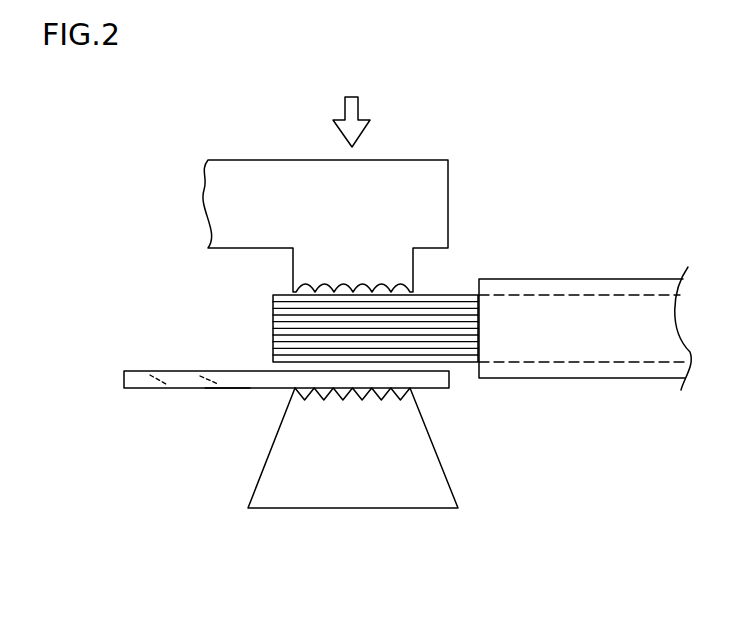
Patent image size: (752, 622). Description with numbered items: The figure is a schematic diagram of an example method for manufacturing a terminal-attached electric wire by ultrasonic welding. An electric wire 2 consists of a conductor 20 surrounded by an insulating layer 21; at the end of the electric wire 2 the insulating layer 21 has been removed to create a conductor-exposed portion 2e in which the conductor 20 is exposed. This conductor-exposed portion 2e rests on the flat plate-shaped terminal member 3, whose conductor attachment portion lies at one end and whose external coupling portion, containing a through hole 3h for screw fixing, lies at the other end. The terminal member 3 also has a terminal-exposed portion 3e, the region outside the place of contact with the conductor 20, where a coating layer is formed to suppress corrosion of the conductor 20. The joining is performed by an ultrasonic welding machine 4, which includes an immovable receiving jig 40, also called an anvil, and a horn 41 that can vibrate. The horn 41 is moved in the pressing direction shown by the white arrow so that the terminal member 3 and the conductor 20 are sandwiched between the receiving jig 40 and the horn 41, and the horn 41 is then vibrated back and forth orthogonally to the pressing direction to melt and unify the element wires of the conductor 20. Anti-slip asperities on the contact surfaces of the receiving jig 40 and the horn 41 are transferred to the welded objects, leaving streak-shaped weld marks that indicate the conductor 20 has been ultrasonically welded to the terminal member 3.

The electric wire 2 is at (585, 270).
The conductor 20 is at (568, 308).
The insulating layer 21 is at (632, 285).
The conductor-exposed portion 2e is at (462, 291).
The terminal member 3 is at (148, 371).
The through hole 3h is at (190, 370).
The terminal-exposed portion 3e is at (225, 398).
The ultrasonic welding machine 4 is at (325, 197).
The receiving jig 40 is at (328, 485).
The horn 41 is at (232, 168).